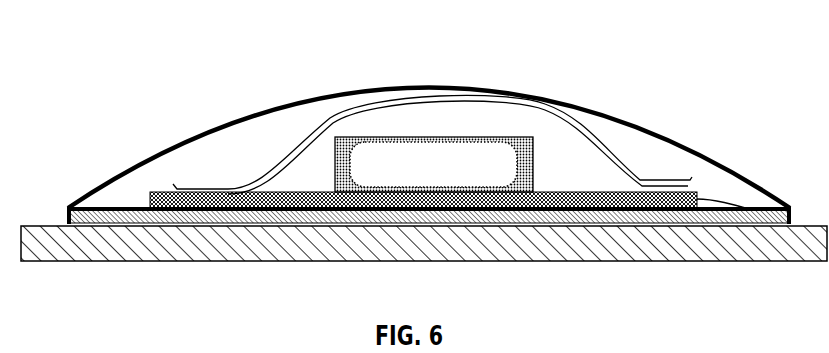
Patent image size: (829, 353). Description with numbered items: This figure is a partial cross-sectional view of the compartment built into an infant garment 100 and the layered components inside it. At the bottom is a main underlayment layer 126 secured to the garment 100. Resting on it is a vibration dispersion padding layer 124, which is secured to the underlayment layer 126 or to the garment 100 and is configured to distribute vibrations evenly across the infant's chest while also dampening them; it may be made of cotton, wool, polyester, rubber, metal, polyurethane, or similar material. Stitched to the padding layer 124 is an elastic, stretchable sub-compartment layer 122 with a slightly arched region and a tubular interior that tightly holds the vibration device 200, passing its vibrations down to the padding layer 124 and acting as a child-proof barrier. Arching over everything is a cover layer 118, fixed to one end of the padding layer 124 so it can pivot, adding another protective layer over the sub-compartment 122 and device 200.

The garment 100 is at (90, 261).
The vibration dispersion padding layer 124 is at (745, 218).
The main underlayment layer 126 is at (68, 212).
The cover layer 118 is at (293, 132).
The sub-compartment layer 122 is at (512, 137).
The vibration device 200 is at (403, 155).